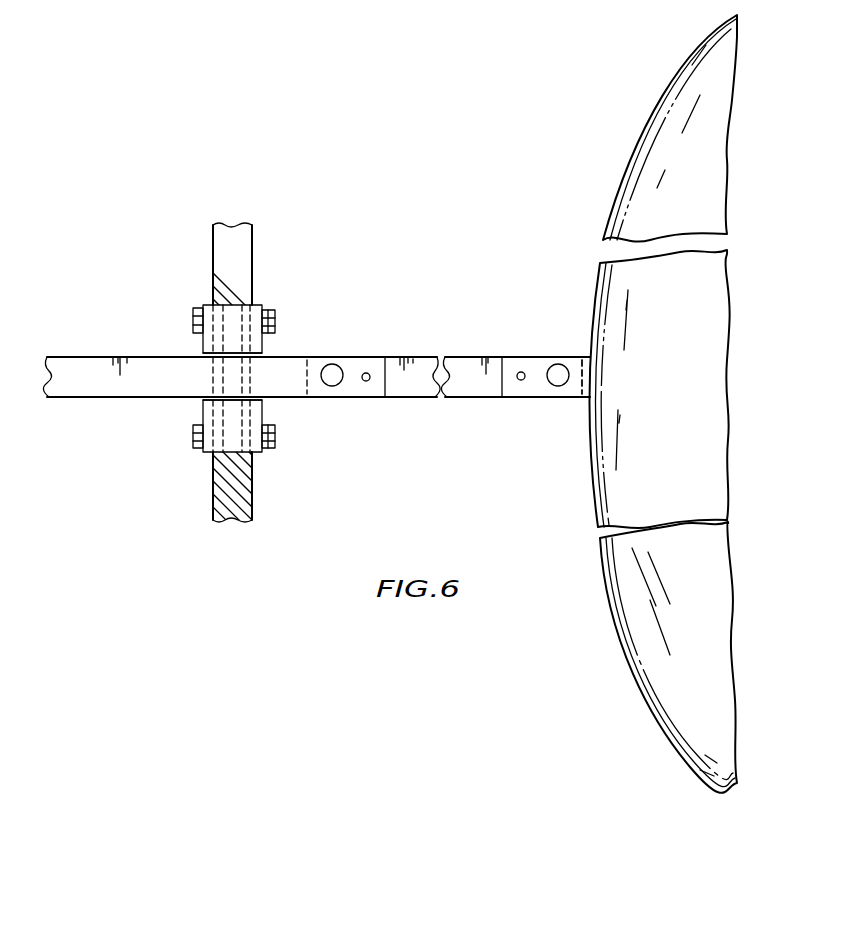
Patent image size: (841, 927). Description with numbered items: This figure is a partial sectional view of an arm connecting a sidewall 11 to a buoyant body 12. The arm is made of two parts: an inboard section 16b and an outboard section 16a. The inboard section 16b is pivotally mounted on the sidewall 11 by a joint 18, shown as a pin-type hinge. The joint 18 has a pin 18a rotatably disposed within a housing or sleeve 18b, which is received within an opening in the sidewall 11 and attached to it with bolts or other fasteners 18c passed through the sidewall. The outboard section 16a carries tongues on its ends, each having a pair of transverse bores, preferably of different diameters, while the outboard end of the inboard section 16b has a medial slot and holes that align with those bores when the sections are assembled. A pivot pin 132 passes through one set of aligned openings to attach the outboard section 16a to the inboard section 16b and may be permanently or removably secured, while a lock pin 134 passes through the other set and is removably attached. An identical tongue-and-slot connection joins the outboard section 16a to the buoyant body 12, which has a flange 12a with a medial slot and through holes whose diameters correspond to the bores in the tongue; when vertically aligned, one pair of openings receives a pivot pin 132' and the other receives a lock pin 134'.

The sidewall 11 is at (213, 252).
The buoyant body 12 is at (691, 183).
The flange 12a is at (548, 398).
The outboard section 16a is at (458, 357).
The inboard section 16b is at (90, 357).
The joint 18 is at (167, 442).
The pin 18a is at (218, 340).
The sleeve 18b is at (203, 408).
The fasteners 18c is at (275, 437).
The pivot pin 132 is at (345, 354).
The pivot pin 132' is at (534, 354).
The lock pin 134 is at (376, 409).
The lock pin 134' is at (489, 409).